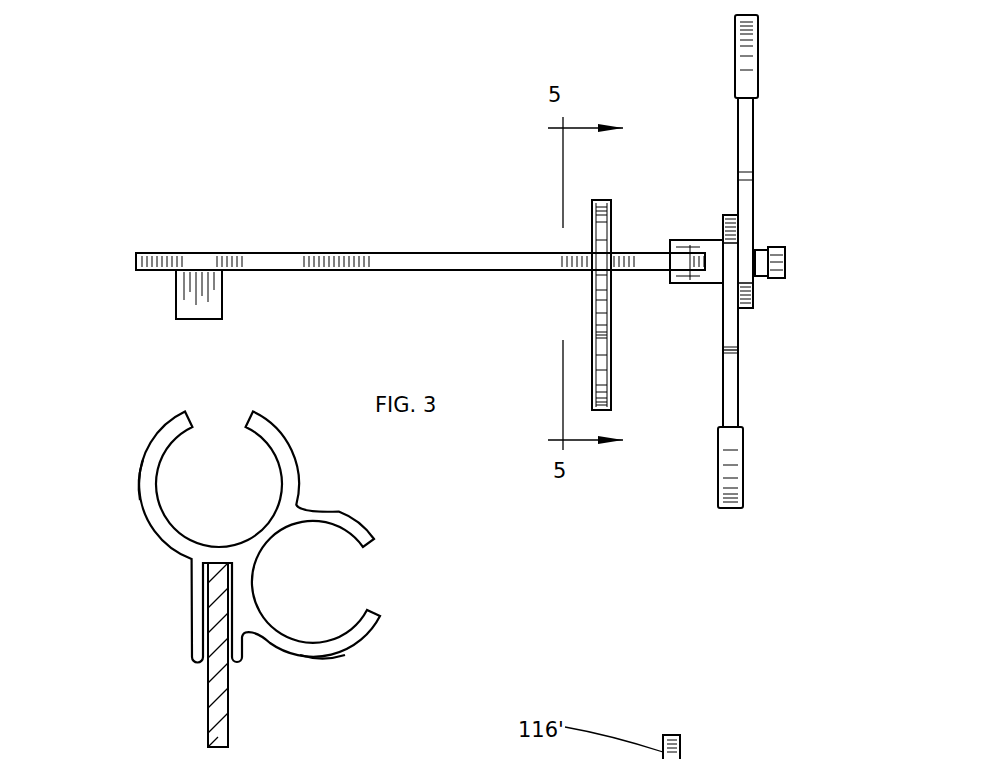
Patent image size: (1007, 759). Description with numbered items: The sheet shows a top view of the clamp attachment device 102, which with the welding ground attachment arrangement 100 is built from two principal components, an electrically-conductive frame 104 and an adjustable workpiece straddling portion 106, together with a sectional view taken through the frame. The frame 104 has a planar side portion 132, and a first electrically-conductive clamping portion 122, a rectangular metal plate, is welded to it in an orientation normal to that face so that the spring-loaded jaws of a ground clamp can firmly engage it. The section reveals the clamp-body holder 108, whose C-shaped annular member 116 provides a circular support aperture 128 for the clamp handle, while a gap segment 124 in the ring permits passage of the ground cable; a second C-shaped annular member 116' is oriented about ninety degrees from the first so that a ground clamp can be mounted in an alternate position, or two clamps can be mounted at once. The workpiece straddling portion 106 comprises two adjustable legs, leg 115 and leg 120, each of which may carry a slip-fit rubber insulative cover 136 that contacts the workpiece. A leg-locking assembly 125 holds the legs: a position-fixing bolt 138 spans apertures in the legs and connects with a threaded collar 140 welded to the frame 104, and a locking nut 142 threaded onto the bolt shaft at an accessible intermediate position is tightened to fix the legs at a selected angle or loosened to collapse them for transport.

In FIG. 3, the ratchet tool assembly 100 is at (157, 137).
In FIG. 3, the clamp attachment device 102 is at (137, 180).
In FIG. 3, the electrically-conductive frame 104 is at (155, 237).
In FIG. 5, the electrically-conductive frame 104 is at (205, 701).
In FIG. 3, the adjustable workpiece straddling portion 106 is at (785, 406).
In FIG. 3, the clamp-body holder 108 is at (585, 311).
In FIG. 5, the clamp-body holder 108 is at (182, 583).
In FIG. 3, the leg 115 is at (721, 344).
In FIG. 3, the C-shaped annular member 116 is at (630, 308).
In FIG. 5, the C-shaped annular member 116 is at (364, 680).
In FIG. 5, the second C-shaped annular member 116' is at (94, 464).
In FIG. 3, the leg 120 is at (755, 117).
In FIG. 3, the first electrically-conductive clamping portion 122 is at (212, 311).
In FIG. 5, the gap segment 124 is at (224, 420).
In FIG. 3, the leg-locking assembly 125 is at (792, 281).
In FIG. 5, the circular support aperture 128 is at (213, 477).
In FIG. 3, the side portion 132 is at (393, 270).
In FIG. 3, the insulative cover 136 is at (736, 59).
In FIG. 3, the position-fixing bolt 138 is at (776, 247).
In FIG. 3, the threaded collar 140 is at (694, 241).
In FIG. 3, the locking nut 142 is at (731, 213).